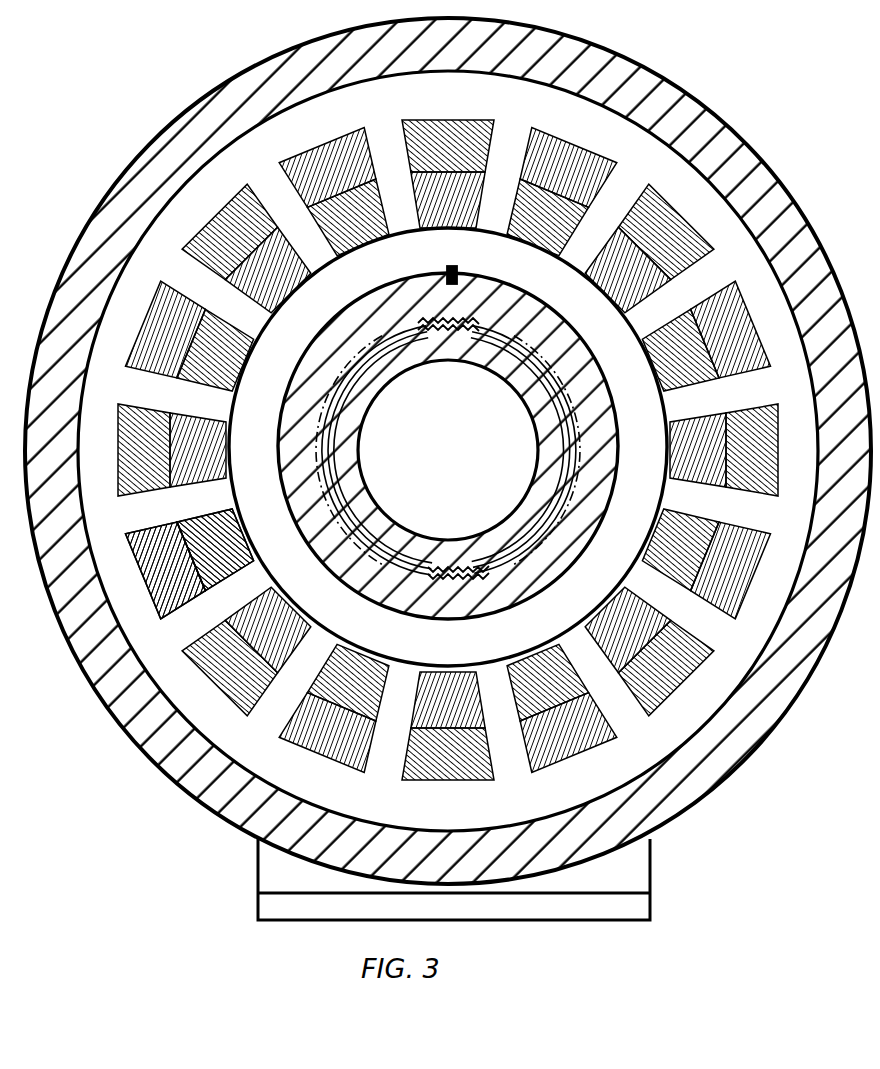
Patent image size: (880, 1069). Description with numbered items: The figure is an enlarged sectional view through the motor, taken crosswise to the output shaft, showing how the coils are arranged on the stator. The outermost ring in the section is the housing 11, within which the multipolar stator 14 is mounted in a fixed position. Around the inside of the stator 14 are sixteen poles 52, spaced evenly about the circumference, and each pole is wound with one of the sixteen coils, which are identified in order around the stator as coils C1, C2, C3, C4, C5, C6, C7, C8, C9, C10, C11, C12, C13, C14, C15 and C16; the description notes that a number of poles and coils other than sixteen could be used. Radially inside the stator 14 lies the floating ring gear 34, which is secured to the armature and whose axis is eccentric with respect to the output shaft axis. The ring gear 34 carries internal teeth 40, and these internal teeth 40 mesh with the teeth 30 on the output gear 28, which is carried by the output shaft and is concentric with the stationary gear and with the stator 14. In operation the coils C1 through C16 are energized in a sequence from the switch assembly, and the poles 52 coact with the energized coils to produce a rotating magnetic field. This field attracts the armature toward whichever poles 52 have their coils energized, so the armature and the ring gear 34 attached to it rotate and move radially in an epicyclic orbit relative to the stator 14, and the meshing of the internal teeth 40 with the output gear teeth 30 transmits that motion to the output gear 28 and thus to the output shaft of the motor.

The housing 11 is at (745, 133).
The stator 14 is at (603, 117).
The output gear 28 is at (363, 403).
The output gear teeth 30 is at (450, 334).
The floating ring gear 34 is at (519, 272).
The internal teeth 40 is at (422, 322).
The poles 52 is at (445, 474).
The coil C1 is at (583, 748).
The coil C2 is at (693, 666).
The coil C3 is at (747, 573).
The coil C4 is at (770, 436).
The coil C5 is at (745, 313).
The coil C6 is at (641, 197).
The coil C7 is at (460, 120).
The coil C8 is at (353, 128).
The coil C9 is at (233, 199).
The coil C10 is at (163, 300).
The coil C11 is at (133, 437).
The coil C12 is at (133, 554).
The coil C13 is at (154, 608).
The coil C14 is at (234, 707).
The coil C15 is at (348, 773).
The coil C16 is at (478, 790).